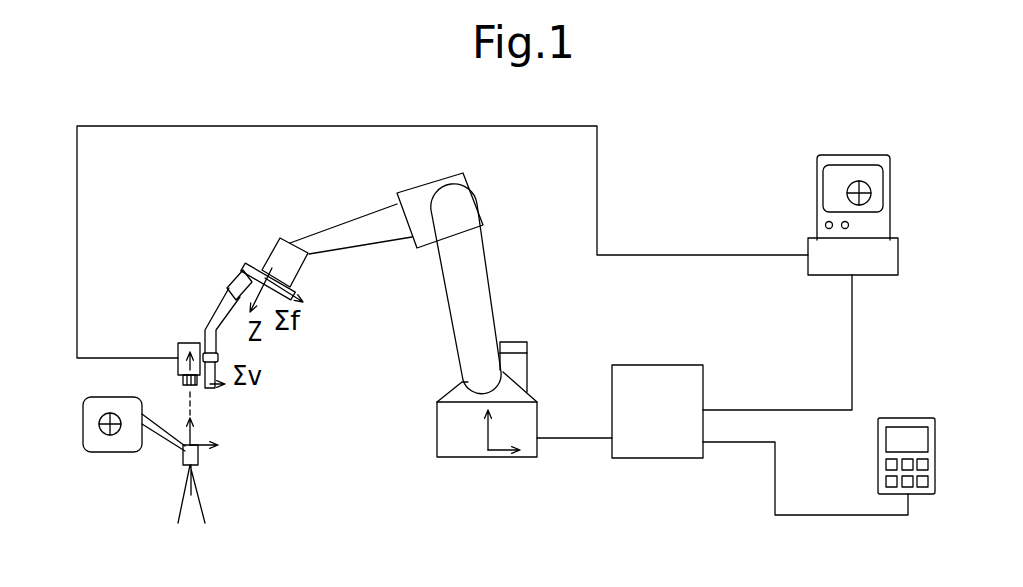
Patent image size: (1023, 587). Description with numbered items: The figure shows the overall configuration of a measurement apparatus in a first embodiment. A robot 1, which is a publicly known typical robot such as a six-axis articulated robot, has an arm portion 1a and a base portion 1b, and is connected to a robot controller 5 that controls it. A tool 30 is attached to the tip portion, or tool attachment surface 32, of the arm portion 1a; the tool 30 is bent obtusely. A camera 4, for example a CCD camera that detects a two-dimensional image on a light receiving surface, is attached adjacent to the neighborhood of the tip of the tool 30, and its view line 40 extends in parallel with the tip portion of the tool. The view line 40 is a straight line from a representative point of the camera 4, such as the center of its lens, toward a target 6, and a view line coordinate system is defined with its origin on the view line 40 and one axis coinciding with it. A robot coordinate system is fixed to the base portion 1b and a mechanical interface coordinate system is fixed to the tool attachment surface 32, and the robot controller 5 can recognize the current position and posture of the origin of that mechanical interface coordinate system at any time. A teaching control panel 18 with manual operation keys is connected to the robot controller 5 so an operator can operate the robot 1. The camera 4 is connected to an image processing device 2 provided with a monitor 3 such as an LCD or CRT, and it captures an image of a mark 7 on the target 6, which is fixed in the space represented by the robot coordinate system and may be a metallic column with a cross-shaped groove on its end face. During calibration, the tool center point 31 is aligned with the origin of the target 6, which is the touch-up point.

The robot 1 is at (478, 310).
The arm portion 1a is at (345, 228).
The base portion 1b is at (437, 428).
The image processing device 2 is at (872, 258).
The monitor 3 is at (880, 225).
The camera 4 is at (187, 343).
The robot controller 5 is at (693, 390).
The target 6 is at (200, 455).
The mark 7 is at (107, 452).
The teaching control panel 18 is at (938, 457).
The tool 30 is at (223, 310).
The tool center point 31 is at (200, 396).
The tool attachment surface 32 is at (227, 285).
The view line 40 is at (203, 398).